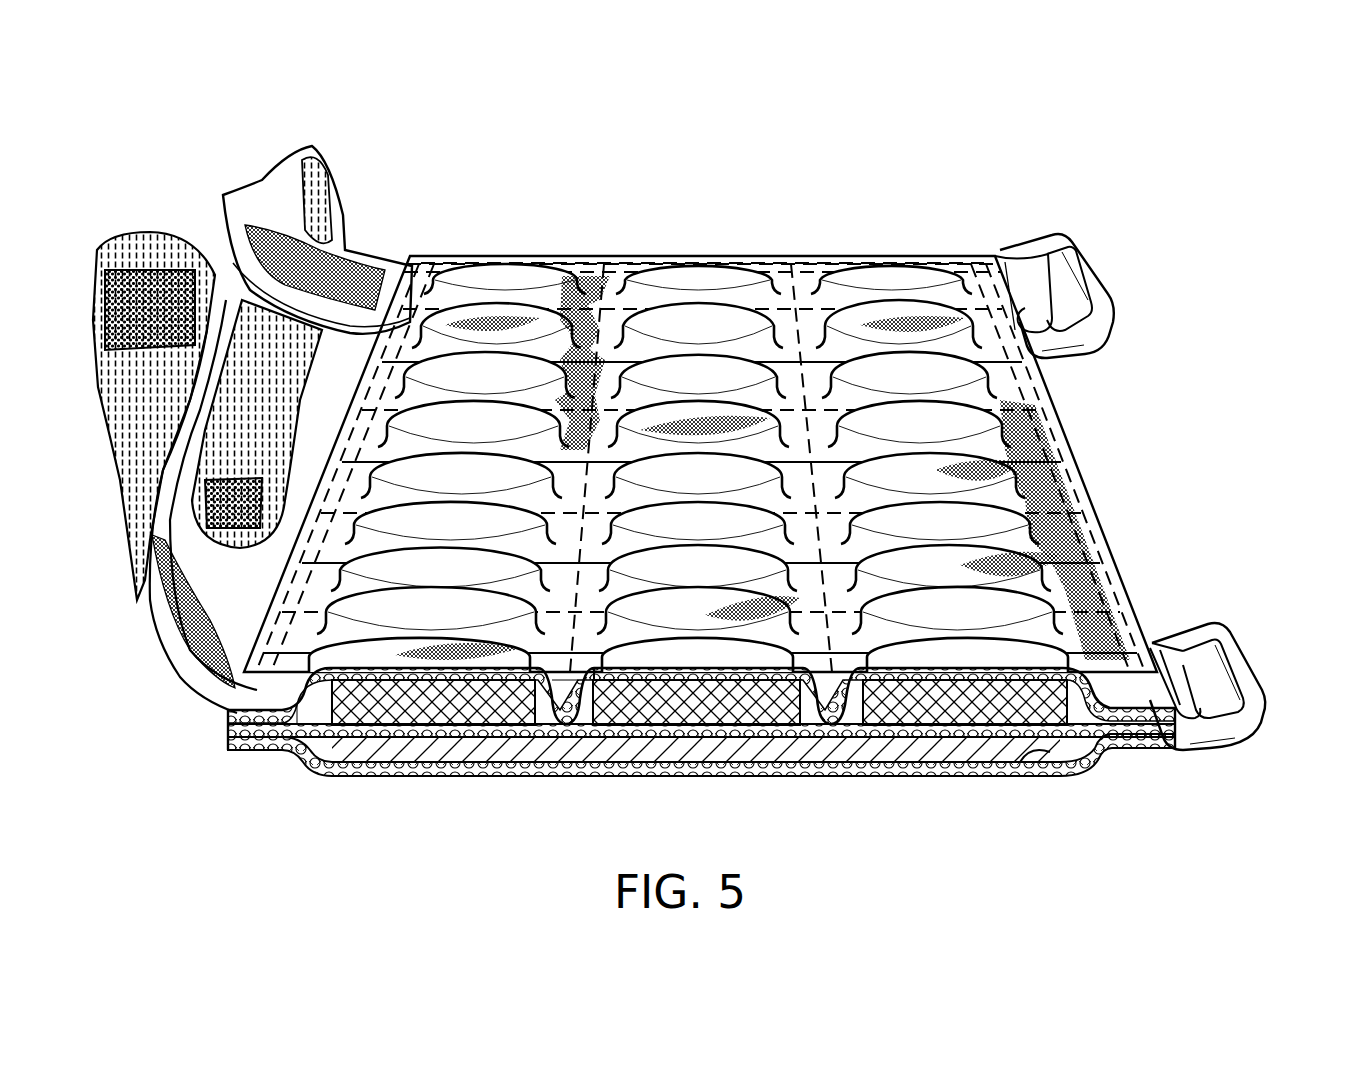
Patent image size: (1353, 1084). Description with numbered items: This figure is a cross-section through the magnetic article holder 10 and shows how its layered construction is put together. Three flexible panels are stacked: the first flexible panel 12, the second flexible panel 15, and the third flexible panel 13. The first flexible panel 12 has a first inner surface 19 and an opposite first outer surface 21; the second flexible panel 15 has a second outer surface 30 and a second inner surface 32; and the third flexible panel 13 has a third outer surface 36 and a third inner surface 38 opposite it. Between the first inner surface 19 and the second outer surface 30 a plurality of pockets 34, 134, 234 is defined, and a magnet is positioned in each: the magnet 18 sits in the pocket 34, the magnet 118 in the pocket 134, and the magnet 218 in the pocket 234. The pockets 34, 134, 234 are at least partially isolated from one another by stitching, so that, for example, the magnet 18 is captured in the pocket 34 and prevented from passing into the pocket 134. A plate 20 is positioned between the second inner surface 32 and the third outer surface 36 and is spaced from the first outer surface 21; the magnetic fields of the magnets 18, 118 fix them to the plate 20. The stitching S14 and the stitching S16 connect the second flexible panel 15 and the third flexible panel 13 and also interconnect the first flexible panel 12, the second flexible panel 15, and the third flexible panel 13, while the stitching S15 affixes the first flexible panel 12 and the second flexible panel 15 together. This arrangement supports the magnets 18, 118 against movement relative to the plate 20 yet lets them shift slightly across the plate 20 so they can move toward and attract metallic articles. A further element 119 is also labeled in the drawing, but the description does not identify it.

The magnetic article holder 10 is at (697, 238).
The first flexible panel 12 is at (228, 716).
The third flexible panel 13 is at (228, 745).
The second flexible panel 15 is at (228, 730).
The magnet 18 is at (445, 703).
The magnet 118 is at (685, 700).
The magnet 218 is at (970, 712).
The first inner surface 19 is at (318, 717).
The plate 20 is at (372, 745).
The first outer surface 21 is at (632, 678).
The channel 119 is at (600, 688).
The second outer surface 30 is at (715, 750).
The second inner surface 32 is at (775, 730).
The pocket 34 is at (318, 717).
The pocket 134 is at (806, 703).
The pocket 234 is at (1078, 708).
The third outer surface 36 is at (1040, 765).
The third inner surface 38 is at (1058, 772).
The stitching S14 is at (420, 260).
The stitching S15 is at (440, 262).
The stitching S16 is at (982, 262).